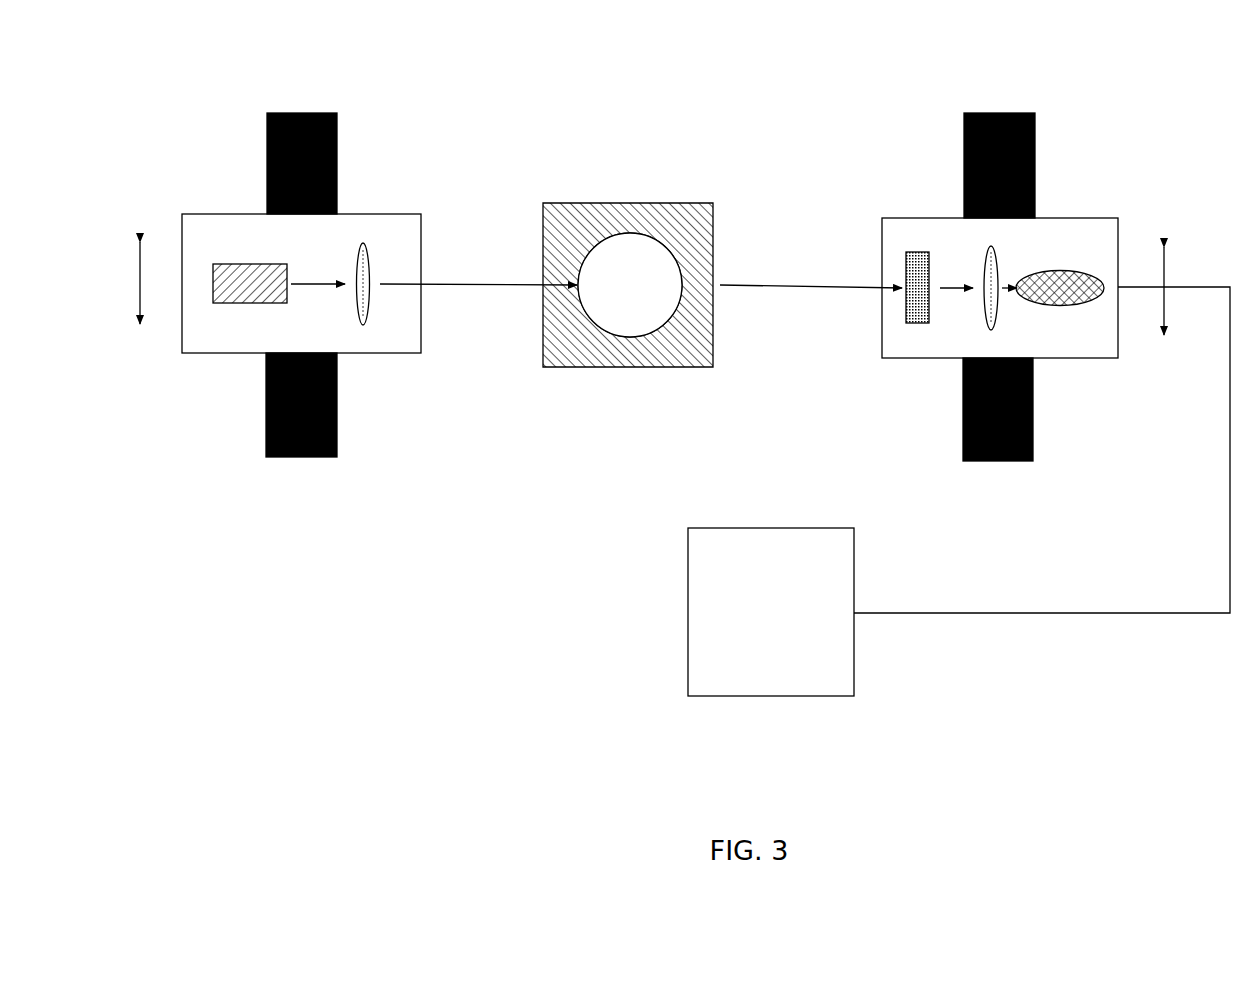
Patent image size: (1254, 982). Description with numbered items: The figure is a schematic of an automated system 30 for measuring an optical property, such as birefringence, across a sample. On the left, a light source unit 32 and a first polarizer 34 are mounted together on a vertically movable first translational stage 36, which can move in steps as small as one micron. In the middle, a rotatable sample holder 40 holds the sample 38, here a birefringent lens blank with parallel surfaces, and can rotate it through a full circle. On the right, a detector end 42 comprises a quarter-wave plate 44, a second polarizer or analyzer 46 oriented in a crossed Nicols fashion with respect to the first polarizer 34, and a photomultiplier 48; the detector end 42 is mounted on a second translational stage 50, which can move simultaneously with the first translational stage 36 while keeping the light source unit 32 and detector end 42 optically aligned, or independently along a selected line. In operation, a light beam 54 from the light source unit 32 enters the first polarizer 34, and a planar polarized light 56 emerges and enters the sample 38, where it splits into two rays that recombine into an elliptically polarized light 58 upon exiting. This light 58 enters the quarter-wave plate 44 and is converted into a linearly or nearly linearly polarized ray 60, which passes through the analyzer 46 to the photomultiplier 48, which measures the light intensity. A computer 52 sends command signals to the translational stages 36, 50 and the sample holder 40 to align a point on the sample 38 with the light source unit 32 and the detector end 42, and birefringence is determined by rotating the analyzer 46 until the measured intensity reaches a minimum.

The automated system 30 is at (355, 78).
The light source unit 32 is at (250, 303).
The first polarizer 34 is at (363, 299).
The first translational stage 36 is at (302, 457).
The sample 38 is at (630, 285).
The sample holder 40 is at (673, 357).
The detector end 42 is at (917, 217).
The quarter-wave plate 44 is at (925, 302).
The second polarizer or analyzer 46 is at (1002, 302).
The photomultiplier 48 is at (1060, 308).
The second translational stage 50 is at (1008, 461).
The computer 52 is at (771, 612).
The light beam 54 is at (318, 271).
The planar polarized light 56 is at (478, 265).
The elliptically polarized light 58 is at (811, 269).
The linearly or nearly linearly polarized ray 60 is at (958, 272).